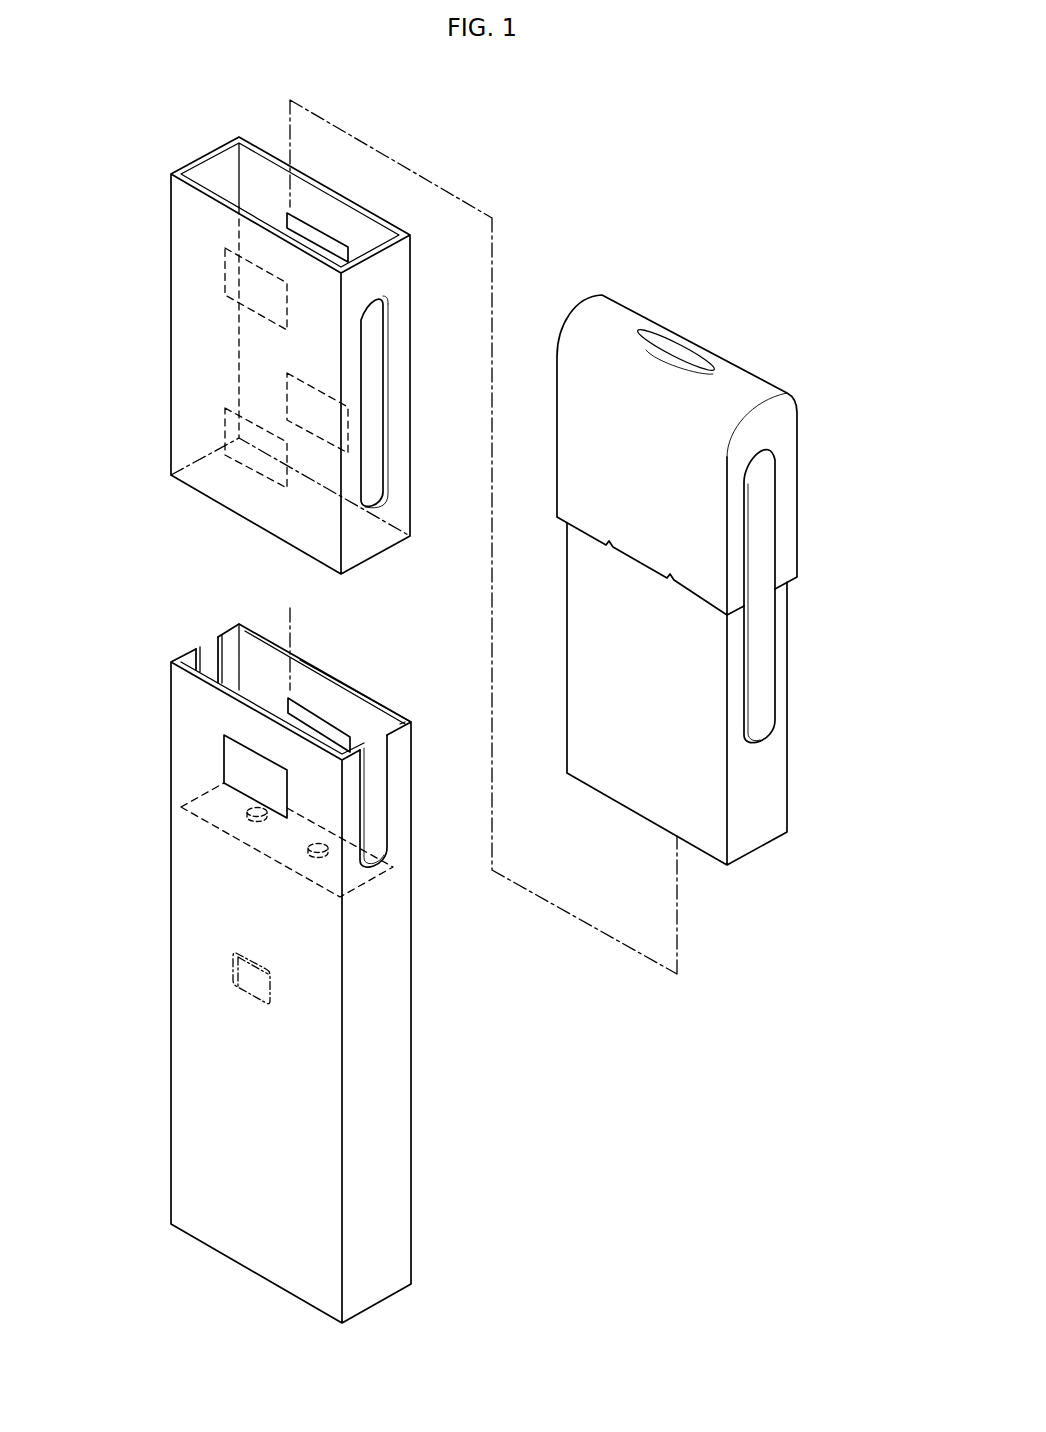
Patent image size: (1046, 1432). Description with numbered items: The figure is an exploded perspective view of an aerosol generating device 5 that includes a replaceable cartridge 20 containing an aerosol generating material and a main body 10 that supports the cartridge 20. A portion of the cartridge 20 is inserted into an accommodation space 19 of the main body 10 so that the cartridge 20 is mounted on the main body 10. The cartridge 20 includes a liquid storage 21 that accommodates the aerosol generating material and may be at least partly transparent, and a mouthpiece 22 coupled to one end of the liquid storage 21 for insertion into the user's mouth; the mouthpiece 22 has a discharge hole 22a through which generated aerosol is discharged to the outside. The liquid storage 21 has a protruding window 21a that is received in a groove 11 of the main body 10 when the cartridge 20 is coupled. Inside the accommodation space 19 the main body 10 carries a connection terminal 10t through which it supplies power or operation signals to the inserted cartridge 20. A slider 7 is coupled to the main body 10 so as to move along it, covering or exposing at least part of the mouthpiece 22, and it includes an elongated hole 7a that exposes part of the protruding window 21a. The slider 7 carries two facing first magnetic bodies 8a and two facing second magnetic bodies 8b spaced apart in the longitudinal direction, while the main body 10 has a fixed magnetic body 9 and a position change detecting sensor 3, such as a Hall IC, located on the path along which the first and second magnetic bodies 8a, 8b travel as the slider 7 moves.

The aerosol generating device 5 is at (663, 113).
The slider 7 is at (166, 206).
The elongated hole 7a is at (375, 363).
The first magnetic bodies 8a is at (331, 248).
The second magnetic bodies 8b is at (238, 423).
The main body 10 is at (141, 705).
The connection terminal 10t is at (240, 803).
The groove 11 is at (213, 656).
The fixed magnetic body 9 is at (317, 725).
The accommodation space 19 is at (372, 718).
The position change detecting sensor 3 is at (253, 981).
The cartridge 20 is at (800, 369).
The liquid storage 21 is at (577, 634).
The protruding window 21a is at (762, 650).
The mouthpiece 22 is at (565, 422).
The discharge hole 22a is at (647, 336).